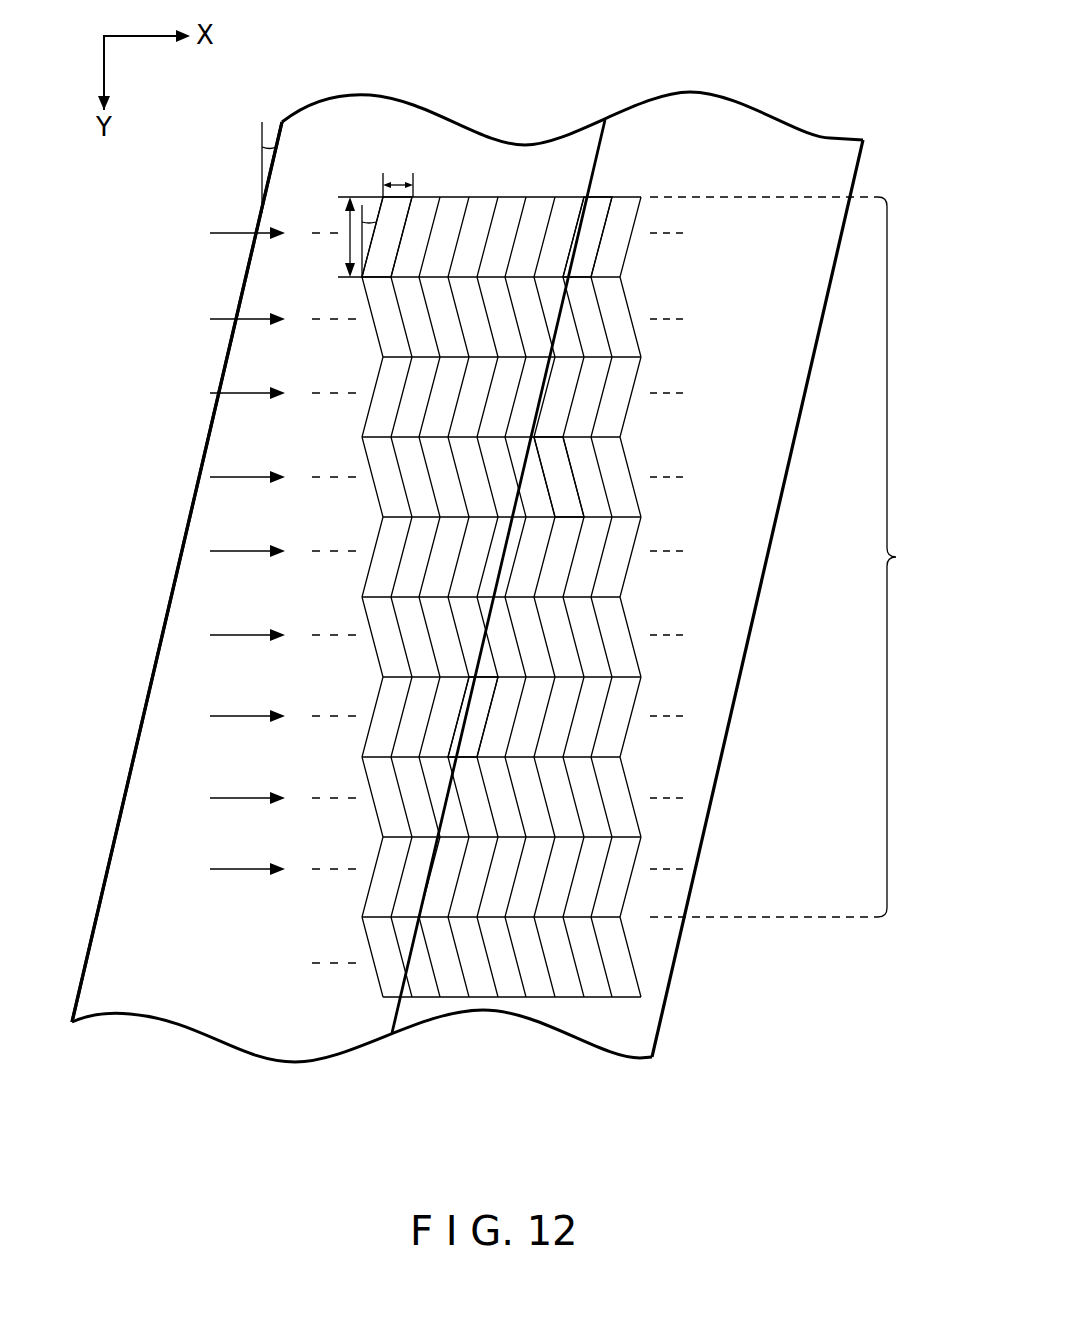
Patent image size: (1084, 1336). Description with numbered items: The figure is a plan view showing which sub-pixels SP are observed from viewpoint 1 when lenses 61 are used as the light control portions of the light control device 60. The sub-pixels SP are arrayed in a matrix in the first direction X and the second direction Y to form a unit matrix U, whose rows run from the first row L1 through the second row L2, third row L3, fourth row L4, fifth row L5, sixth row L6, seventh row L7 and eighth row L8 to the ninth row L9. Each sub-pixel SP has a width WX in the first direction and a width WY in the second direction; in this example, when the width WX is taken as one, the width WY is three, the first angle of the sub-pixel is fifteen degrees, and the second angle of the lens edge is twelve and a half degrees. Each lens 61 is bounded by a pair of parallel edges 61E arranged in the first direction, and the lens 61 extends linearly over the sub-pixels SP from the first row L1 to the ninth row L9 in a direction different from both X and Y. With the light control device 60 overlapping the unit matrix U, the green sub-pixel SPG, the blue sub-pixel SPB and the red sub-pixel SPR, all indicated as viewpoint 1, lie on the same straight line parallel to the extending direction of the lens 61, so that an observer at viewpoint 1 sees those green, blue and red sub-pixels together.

The light control device 60 is at (467, 640).
The lens 61 is at (178, 1010).
The edge of lens 61E is at (257, 211).
The viewpoint 1 is at (501, 597).
The sub-pixel SP is at (383, 196).
The green sub-pixel SPG is at (603, 206).
The blue sub-pixel SPB is at (540, 500).
The red sub-pixel SPR is at (480, 700).
The width WX is at (404, 183).
The width WY is at (348, 229).
The unit matrix U is at (790, 557).
The first row L1 is at (429, 233).
The second row L2 is at (429, 319).
The third row L3 is at (429, 393).
The fourth row L4 is at (429, 477).
The fifth row L5 is at (429, 551).
The sixth row L6 is at (429, 635).
The seventh row L7 is at (429, 716).
The eighth row L8 is at (429, 798).
The ninth row L9 is at (429, 869).